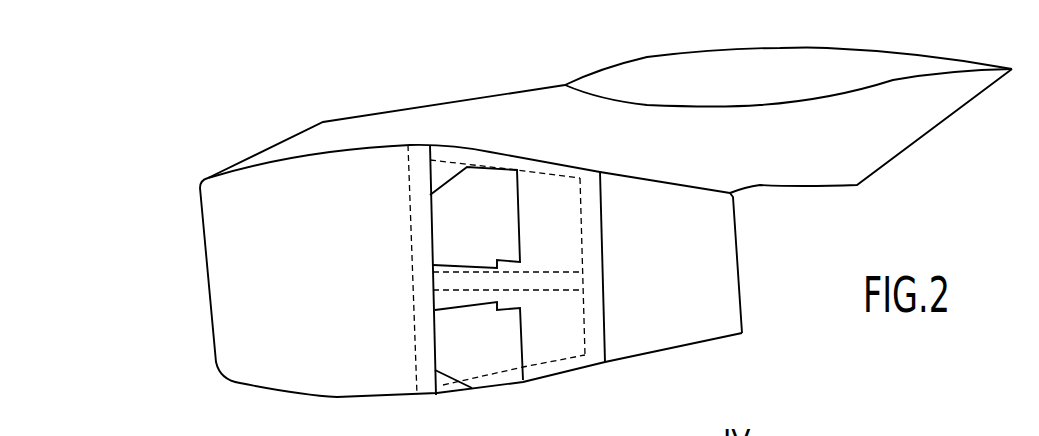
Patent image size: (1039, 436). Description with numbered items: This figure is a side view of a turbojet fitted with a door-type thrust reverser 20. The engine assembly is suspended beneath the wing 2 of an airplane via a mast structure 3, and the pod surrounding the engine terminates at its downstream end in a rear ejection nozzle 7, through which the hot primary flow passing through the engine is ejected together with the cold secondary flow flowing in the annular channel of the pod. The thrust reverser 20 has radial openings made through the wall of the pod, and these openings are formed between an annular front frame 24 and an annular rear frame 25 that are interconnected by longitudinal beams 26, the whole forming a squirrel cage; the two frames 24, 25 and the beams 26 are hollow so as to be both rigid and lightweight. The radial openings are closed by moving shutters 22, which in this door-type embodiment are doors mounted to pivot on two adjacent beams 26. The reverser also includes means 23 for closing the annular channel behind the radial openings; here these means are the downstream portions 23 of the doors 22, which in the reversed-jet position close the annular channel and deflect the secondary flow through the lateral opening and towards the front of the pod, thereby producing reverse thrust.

The wing 2 is at (628, 80).
The mast structure 3 is at (540, 103).
The rear ejection nozzle 7 is at (723, 320).
The thrust reverser 20 is at (520, 393).
The moving shutters 22 is at (490, 175).
The downstream portions of the doors 23 is at (533, 178).
The annular front frame 24 is at (420, 213).
The annular rear frame 25 is at (600, 332).
The longitudinal beams 26 is at (558, 178).